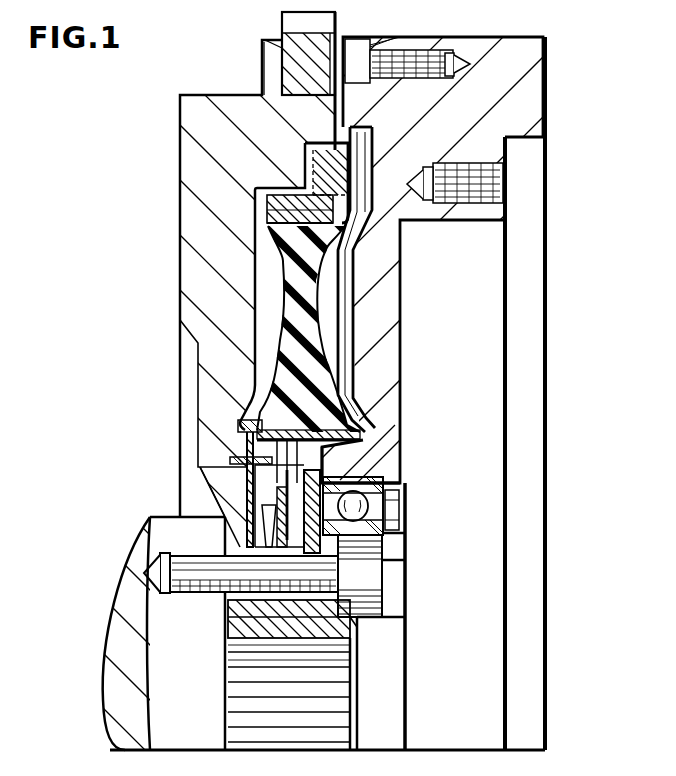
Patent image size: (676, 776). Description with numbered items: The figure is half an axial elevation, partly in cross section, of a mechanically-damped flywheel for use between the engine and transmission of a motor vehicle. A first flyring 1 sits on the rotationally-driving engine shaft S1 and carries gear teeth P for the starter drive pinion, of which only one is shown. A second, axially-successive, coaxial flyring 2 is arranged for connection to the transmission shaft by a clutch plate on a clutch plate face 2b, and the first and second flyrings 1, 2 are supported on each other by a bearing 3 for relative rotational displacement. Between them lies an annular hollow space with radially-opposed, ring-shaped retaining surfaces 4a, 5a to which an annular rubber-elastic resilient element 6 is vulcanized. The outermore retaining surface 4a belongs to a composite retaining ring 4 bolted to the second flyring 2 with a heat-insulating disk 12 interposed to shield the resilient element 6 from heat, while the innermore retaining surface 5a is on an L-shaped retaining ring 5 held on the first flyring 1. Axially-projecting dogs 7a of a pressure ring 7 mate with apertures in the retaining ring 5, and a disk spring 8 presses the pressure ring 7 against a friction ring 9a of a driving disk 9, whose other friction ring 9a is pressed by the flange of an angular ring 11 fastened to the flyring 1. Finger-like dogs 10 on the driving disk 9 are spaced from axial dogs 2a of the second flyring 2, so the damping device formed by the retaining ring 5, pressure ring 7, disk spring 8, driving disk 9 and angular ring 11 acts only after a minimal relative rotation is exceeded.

The first flyring 1 is at (215, 108).
The gear teeth P is at (282, 27).
The second flyring 2 is at (471, 38).
The axial projections or dogs 2a is at (300, 470).
The clutch plate face 2b is at (582, 327).
The bearing 3 is at (385, 506).
The composite retaining ring 4 is at (320, 150).
The outermore retaining surface 4a is at (280, 212).
The retaining ring 5 is at (249, 485).
The innermore retaining surface 5a is at (242, 431).
The resilient element 6 is at (292, 308).
The pressure ring 7 is at (243, 510).
The axially-projecting dogs 7a is at (232, 460).
The disk spring 8 is at (258, 538).
The driving disk 9 is at (258, 493).
The friction ring 9a is at (342, 550).
The finger-like extensions or dogs 10 is at (328, 425).
The angular ring 11 is at (338, 555).
The heat-insulating disk 12 is at (340, 285).
The engine shaft S1 is at (182, 688).